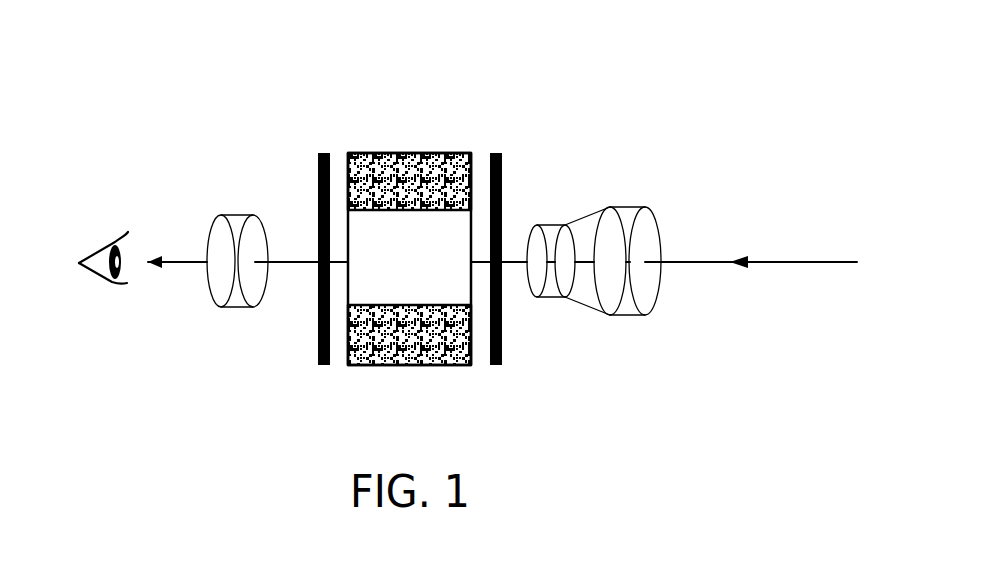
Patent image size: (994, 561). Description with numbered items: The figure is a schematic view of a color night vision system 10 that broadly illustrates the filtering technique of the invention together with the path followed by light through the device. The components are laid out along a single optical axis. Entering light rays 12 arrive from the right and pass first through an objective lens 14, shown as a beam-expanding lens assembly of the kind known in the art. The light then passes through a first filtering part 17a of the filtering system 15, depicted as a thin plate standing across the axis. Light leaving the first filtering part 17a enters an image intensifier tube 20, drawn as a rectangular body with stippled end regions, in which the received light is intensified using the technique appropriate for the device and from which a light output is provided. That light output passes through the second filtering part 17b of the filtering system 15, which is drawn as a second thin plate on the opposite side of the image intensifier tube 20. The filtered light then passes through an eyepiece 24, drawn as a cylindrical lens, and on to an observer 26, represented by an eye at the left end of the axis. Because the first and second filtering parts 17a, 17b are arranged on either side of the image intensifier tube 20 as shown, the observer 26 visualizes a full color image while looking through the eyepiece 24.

The color night vision system 10 is at (191, 389).
The entering light rays 12 is at (800, 264).
The objective lens 14 is at (626, 205).
The filtering system 15 is at (541, 90).
The first filtering part 17a is at (501, 180).
The second filtering part 17b is at (318, 173).
The image intensifier tube 20 is at (438, 366).
The eyepiece 24 is at (235, 213).
The observer 26 is at (100, 283).